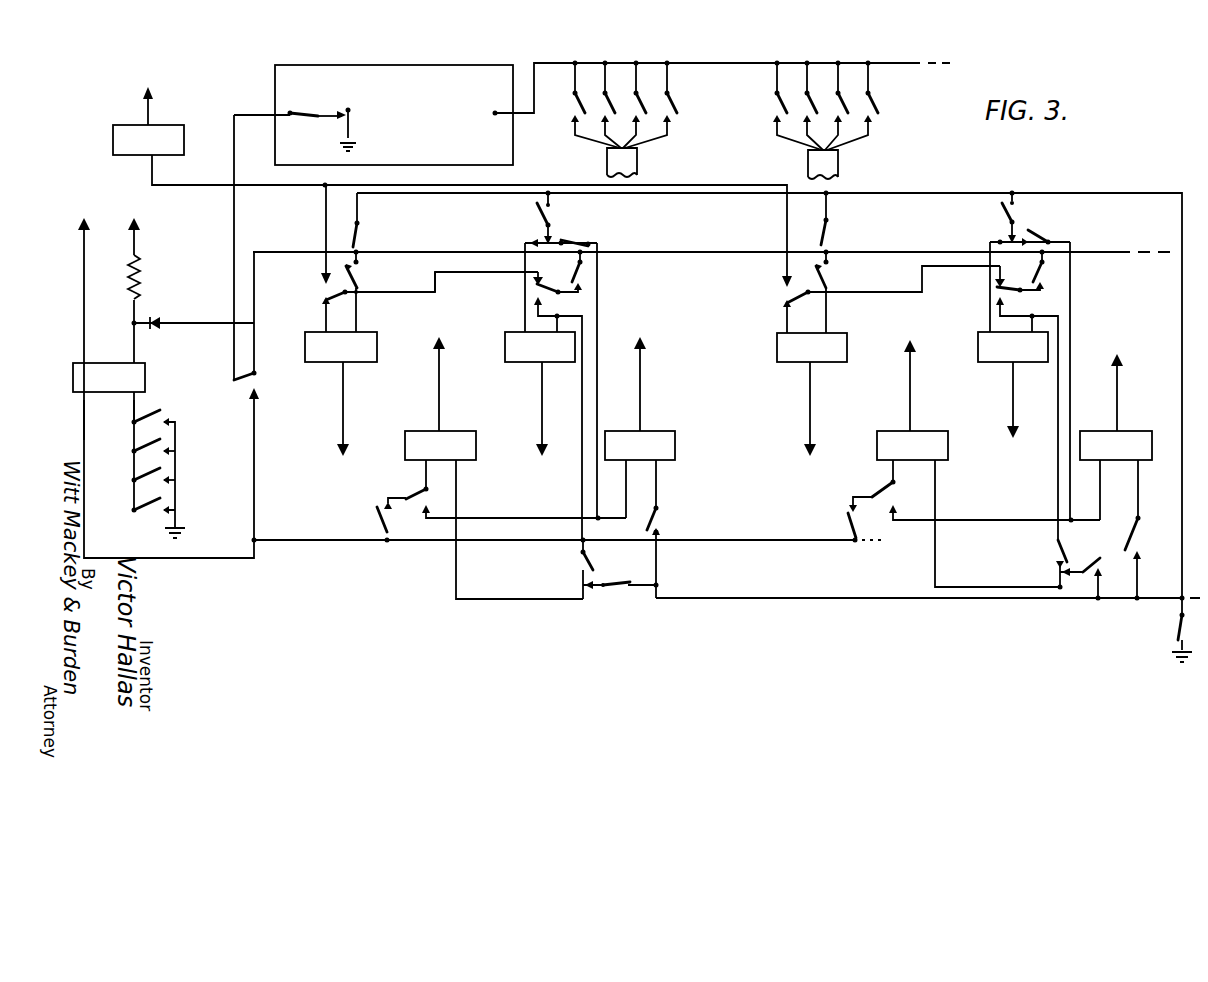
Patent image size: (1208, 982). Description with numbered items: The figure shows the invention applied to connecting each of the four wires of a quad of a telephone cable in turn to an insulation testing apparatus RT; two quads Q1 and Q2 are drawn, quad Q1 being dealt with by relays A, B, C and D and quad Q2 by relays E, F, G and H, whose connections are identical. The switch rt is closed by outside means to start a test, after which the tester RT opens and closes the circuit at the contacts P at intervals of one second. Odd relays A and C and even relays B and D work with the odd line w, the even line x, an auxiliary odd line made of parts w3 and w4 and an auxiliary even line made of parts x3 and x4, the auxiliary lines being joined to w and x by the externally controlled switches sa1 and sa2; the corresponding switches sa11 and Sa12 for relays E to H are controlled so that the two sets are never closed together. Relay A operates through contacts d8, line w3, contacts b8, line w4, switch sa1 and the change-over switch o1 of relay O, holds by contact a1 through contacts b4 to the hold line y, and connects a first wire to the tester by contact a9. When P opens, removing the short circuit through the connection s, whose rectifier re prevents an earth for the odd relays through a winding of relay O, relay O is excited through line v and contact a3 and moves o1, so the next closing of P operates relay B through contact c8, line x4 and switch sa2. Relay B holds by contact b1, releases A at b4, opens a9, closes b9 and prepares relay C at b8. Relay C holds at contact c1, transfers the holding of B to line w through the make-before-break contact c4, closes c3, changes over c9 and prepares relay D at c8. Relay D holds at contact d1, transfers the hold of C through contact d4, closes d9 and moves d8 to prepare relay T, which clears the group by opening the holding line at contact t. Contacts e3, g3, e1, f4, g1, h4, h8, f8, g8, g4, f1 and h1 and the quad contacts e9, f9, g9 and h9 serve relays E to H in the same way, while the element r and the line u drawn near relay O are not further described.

The relay T is at (148, 121).
The insulation testing apparatus RT is at (612, 114).
The contacts p P is at (290, 233).
The switch rt is at (354, 130).
The contact a9 is at (585, 105).
The contacts b9 is at (606, 92).
The contacts c9 is at (637, 92).
The contacts d9 is at (664, 105).
The contact e9 is at (786, 106).
The contact f9 is at (808, 92).
The contact g9 is at (838, 92).
The contact h9 is at (866, 106).
The quad Q1 is at (628, 166).
The quad Q2 is at (828, 167).
The hold line y is at (630, 194).
The odd line w is at (300, 252).
The even line x is at (337, 541).
The resistor r is at (139, 277).
The connection s is at (212, 322).
The rectifier re is at (151, 334).
The change-over relay O is at (109, 377).
The change-over switch o1 is at (257, 380).
The conductor u is at (82, 418).
The line v is at (132, 410).
The contact a3 is at (154, 460).
The contact c3 is at (154, 438).
The contact e3 is at (154, 467).
The contact g3 is at (159, 509).
The contacts b4 is at (368, 224).
The contact a1 is at (364, 292).
The contacts d8 is at (416, 302).
The auxiliary odd line part w3 is at (422, 294).
The relay A is at (341, 394).
The contact c1 is at (531, 218).
The contact d4 is at (561, 369).
The switch sa1 is at (582, 275).
The auxiliary odd line part w4 is at (562, 292).
The contacts b8 is at (558, 418).
The relay C is at (540, 394).
The contact f4 is at (834, 224).
The contact e1 is at (834, 292).
The contact h8 is at (877, 299).
The relay E is at (812, 394).
The contact g1 is at (994, 218).
The contact h4 is at (1030, 366).
The switch sa11 is at (1045, 278).
The contact f8 is at (1027, 418).
The relay G is at (1013, 385).
The relay B is at (494, 468).
The contact c8 is at (406, 484).
The auxiliary even line part x4 is at (388, 497).
The switch sa2 is at (360, 525).
The auxiliary even line part x3 is at (540, 519).
The contact c4 is at (598, 569).
The contact b1 is at (621, 596).
The relay D is at (640, 467).
The contact d1 is at (663, 521).
The relay F is at (968, 463).
The contact g8 is at (872, 486).
The switch sa12 Sa12 is at (831, 525).
The contact g4 is at (1049, 565).
The contact f1 is at (1081, 573).
The relay H is at (1116, 437).
The contact h1 is at (1144, 558).
The contact t is at (1177, 629).